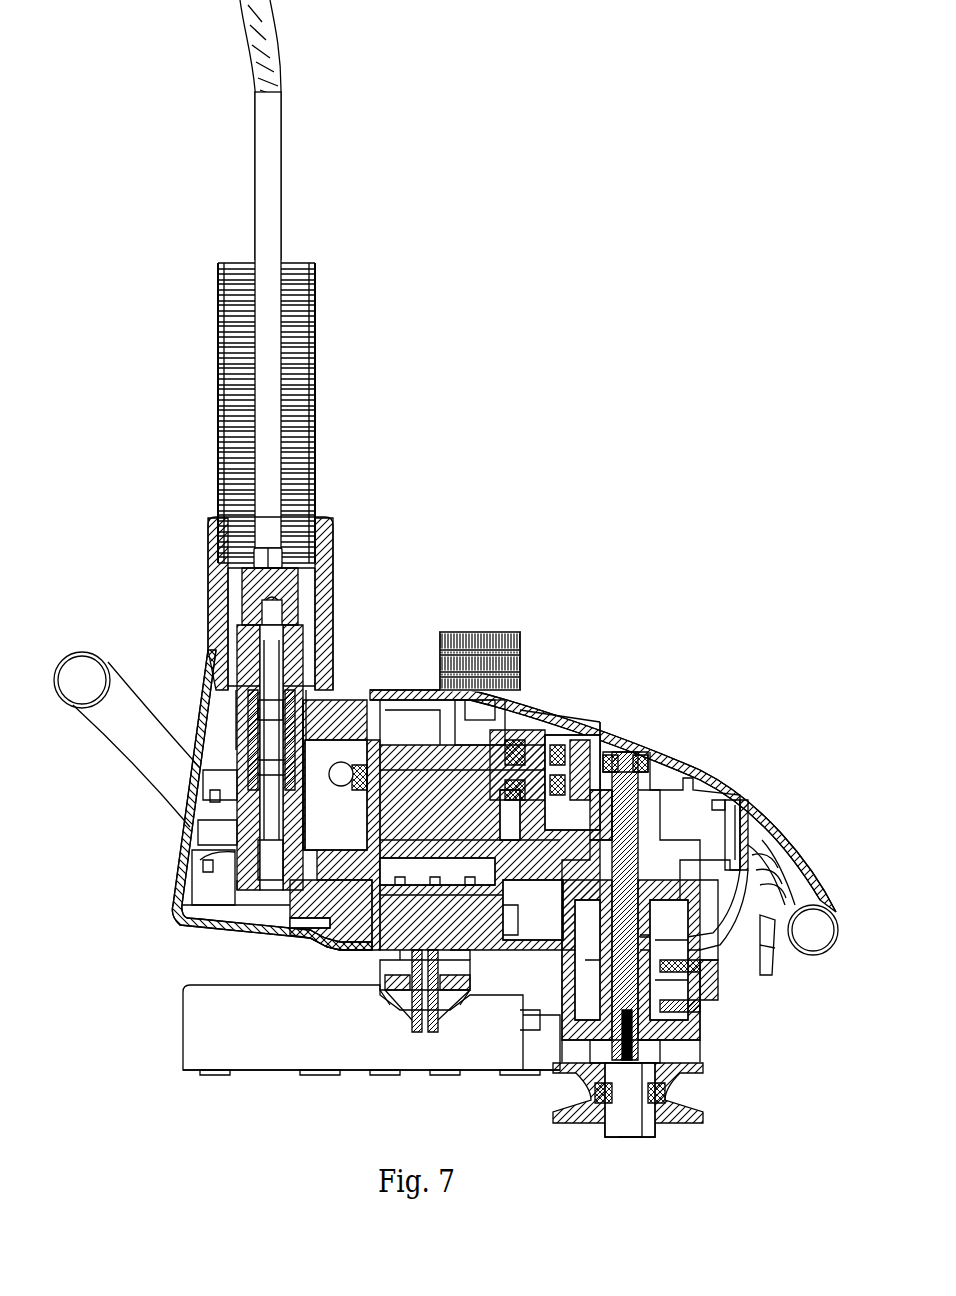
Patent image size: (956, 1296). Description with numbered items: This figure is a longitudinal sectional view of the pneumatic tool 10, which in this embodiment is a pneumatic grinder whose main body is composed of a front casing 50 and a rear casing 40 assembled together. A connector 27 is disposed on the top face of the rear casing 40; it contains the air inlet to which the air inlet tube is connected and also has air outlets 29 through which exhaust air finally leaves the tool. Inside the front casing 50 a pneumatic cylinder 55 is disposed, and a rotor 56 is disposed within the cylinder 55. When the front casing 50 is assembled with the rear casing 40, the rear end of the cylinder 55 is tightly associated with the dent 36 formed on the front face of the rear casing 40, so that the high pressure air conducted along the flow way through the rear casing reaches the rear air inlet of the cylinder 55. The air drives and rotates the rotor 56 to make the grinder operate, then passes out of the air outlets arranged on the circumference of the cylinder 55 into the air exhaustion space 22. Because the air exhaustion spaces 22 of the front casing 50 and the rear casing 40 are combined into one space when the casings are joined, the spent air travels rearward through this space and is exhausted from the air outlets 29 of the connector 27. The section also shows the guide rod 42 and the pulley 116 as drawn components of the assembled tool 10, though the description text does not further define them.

The pneumatic tool 10 is at (535, 480).
The air exhaustion space 22 is at (205, 822).
The connector 27 is at (222, 635).
The air outlets 29 is at (222, 575).
The dent 36 is at (337, 740).
The rear casing 40 is at (155, 889).
The guide rod 42 is at (205, 695).
The front casing 50 is at (650, 722).
The pneumatic cylinder 55 is at (413, 736).
The rotor 56 is at (512, 730).
The pulley 116 is at (665, 1122).